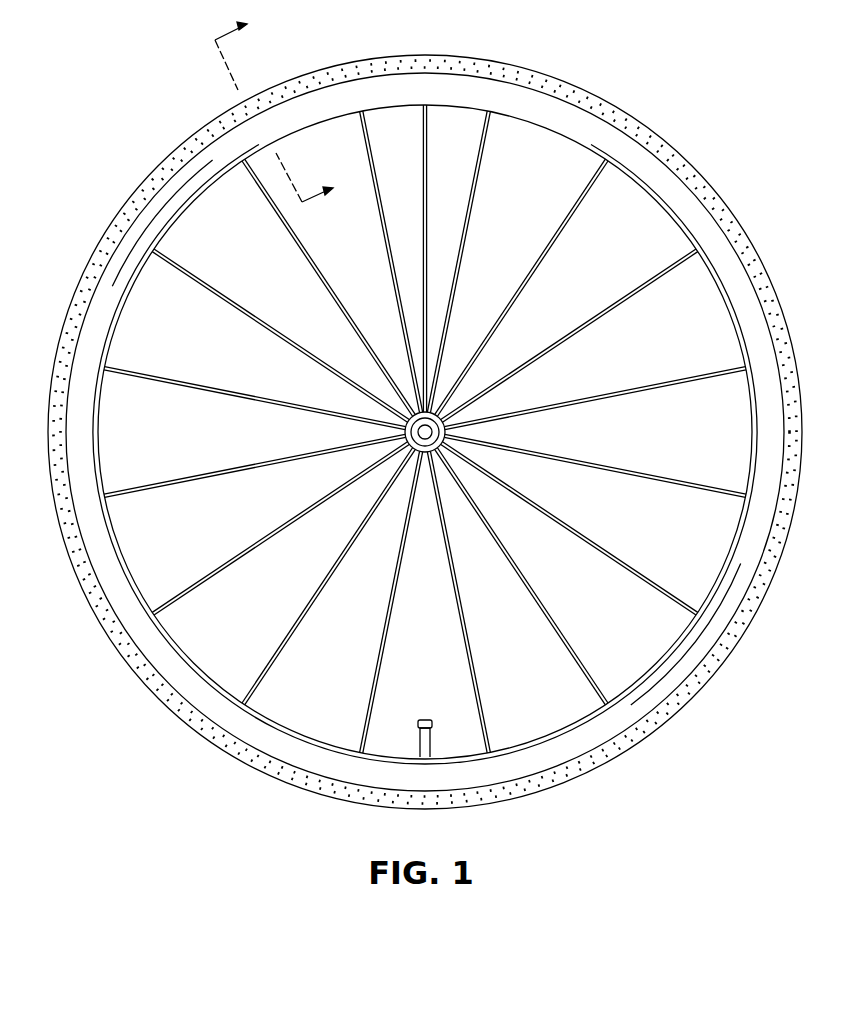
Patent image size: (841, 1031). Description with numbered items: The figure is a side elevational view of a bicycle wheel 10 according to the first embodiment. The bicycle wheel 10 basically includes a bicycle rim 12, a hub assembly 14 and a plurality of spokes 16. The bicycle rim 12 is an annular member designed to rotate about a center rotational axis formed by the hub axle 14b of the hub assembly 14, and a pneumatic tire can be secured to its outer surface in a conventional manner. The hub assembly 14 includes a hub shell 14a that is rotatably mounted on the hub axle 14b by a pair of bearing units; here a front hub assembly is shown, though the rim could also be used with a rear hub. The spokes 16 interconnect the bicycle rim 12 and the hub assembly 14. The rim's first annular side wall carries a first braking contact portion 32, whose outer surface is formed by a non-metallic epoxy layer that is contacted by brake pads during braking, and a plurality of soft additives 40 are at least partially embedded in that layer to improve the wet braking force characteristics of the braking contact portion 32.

The bicycle wheel 10 is at (424, 409).
The bicycle rim 12 is at (729, 312).
The hub assembly 14 is at (419, 434).
The hub shell 14a is at (404, 432).
The hub axle 14b is at (441, 424).
The spokes 16 is at (657, 594).
The first braking contact portion 32 is at (153, 695).
The soft additives 40 is at (128, 663).